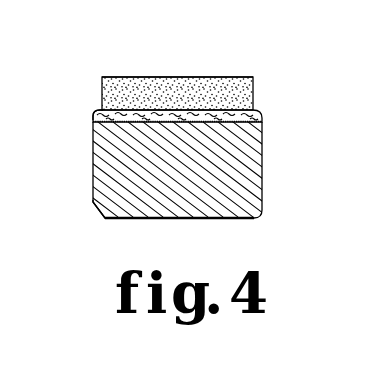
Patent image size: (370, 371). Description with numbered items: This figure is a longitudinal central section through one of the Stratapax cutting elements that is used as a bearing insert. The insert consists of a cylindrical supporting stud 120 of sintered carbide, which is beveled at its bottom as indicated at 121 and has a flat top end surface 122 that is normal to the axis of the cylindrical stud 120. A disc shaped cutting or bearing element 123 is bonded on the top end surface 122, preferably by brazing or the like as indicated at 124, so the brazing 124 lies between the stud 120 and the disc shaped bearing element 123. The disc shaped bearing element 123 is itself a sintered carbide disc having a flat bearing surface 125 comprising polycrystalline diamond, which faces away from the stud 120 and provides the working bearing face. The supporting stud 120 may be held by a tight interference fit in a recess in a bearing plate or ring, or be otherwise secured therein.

The substrate body 120 is at (245, 173).
The chamfered edge 121 is at (97, 215).
The intermediate layer 122 is at (246, 126).
The top coating layer 123 is at (255, 97).
The rounded edge 124 is at (93, 116).
The top surface 125 is at (164, 77).